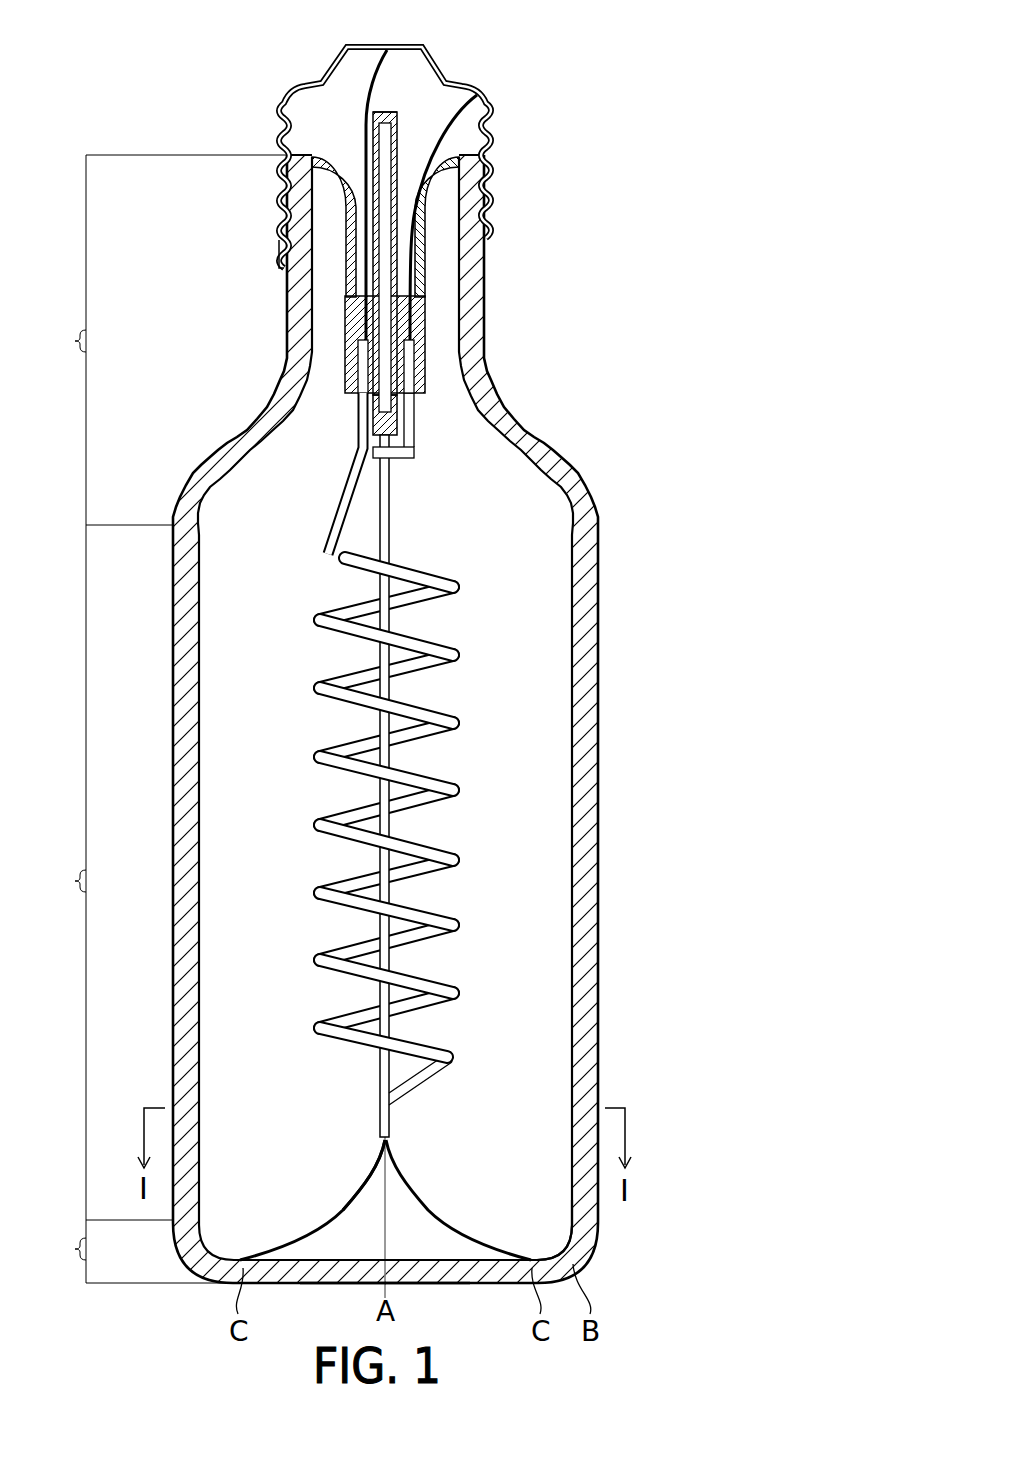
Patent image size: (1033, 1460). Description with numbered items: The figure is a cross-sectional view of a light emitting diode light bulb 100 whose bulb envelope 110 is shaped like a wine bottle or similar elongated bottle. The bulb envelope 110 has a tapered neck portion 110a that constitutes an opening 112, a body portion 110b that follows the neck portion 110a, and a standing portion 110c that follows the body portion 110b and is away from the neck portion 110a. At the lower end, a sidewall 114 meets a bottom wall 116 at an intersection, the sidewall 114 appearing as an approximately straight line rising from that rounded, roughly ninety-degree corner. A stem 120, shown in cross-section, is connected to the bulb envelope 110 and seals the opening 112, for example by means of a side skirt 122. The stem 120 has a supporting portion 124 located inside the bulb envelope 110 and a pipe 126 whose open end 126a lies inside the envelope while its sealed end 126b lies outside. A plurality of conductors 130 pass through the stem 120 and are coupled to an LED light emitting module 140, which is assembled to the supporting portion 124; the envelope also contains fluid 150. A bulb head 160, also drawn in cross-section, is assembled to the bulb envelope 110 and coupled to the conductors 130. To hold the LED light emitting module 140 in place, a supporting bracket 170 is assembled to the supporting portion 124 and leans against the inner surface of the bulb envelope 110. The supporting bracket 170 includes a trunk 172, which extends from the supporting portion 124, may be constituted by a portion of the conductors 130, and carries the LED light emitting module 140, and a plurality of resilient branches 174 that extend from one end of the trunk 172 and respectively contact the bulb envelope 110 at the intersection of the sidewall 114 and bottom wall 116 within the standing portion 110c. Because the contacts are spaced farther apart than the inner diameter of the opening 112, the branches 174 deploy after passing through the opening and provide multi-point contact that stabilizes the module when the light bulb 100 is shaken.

The LED light bulb 100 is at (655, 112).
The bulb envelope 110 is at (606, 730).
The neck portion 110a is at (167, 340).
The body portion 110b is at (97, 872).
The standing portion 110c is at (127, 1251).
The opening 112 is at (454, 141).
The sidewall 114 is at (583, 1208).
The bottom wall 116 is at (480, 1272).
The stem 120 is at (481, 224).
The side skirt 122 is at (430, 200).
The supporting portion 124 is at (425, 333).
The pipe 126 is at (383, 252).
The open end 126a is at (400, 395).
The sealed end 126b is at (385, 112).
The conductors 130 is at (372, 80).
The LED light emitting module 140 is at (502, 786).
The fluid 150 is at (513, 535).
The bulb head 160 is at (283, 142).
The supporting bracket 170 is at (410, 1140).
The trunk 172 is at (390, 1117).
The branches 174 is at (460, 1237).